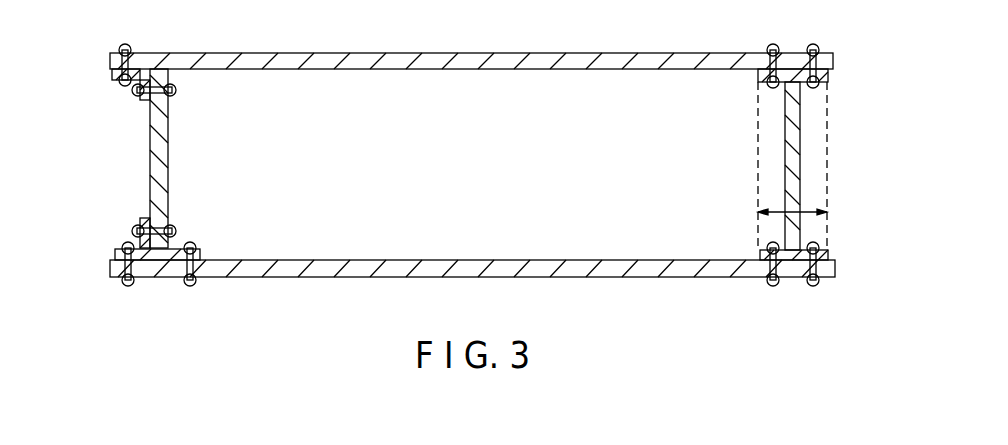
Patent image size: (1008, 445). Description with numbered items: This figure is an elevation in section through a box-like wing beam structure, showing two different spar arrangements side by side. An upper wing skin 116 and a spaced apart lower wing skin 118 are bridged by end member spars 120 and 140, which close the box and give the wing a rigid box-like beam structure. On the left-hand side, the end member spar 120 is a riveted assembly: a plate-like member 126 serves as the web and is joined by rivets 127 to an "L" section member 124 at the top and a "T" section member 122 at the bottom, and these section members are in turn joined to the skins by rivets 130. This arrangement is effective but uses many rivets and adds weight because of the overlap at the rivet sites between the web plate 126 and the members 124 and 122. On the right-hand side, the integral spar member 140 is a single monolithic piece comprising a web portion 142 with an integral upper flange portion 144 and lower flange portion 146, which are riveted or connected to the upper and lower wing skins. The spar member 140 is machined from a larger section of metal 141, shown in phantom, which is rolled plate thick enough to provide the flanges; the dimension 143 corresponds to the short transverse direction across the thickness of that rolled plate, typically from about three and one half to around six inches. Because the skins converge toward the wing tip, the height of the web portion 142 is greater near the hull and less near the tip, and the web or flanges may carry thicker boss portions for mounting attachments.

The upper wing skin 116 is at (447, 56).
The lower wing skin 118 is at (642, 278).
The end member spar 120 is at (150, 156).
The "T" section member 122 is at (195, 250).
The "L" section member 124 is at (116, 80).
The plate-like member 126 is at (168, 162).
The rivets 127 is at (170, 92).
The rivets 130 is at (130, 48).
The integral spar member 140 is at (803, 178).
The larger section of metal 141 is at (832, 105).
The web portion 142 is at (792, 122).
The dimension 143 is at (778, 209).
The upper flange portion 144 is at (778, 72).
The lower flange portion 146 is at (830, 255).